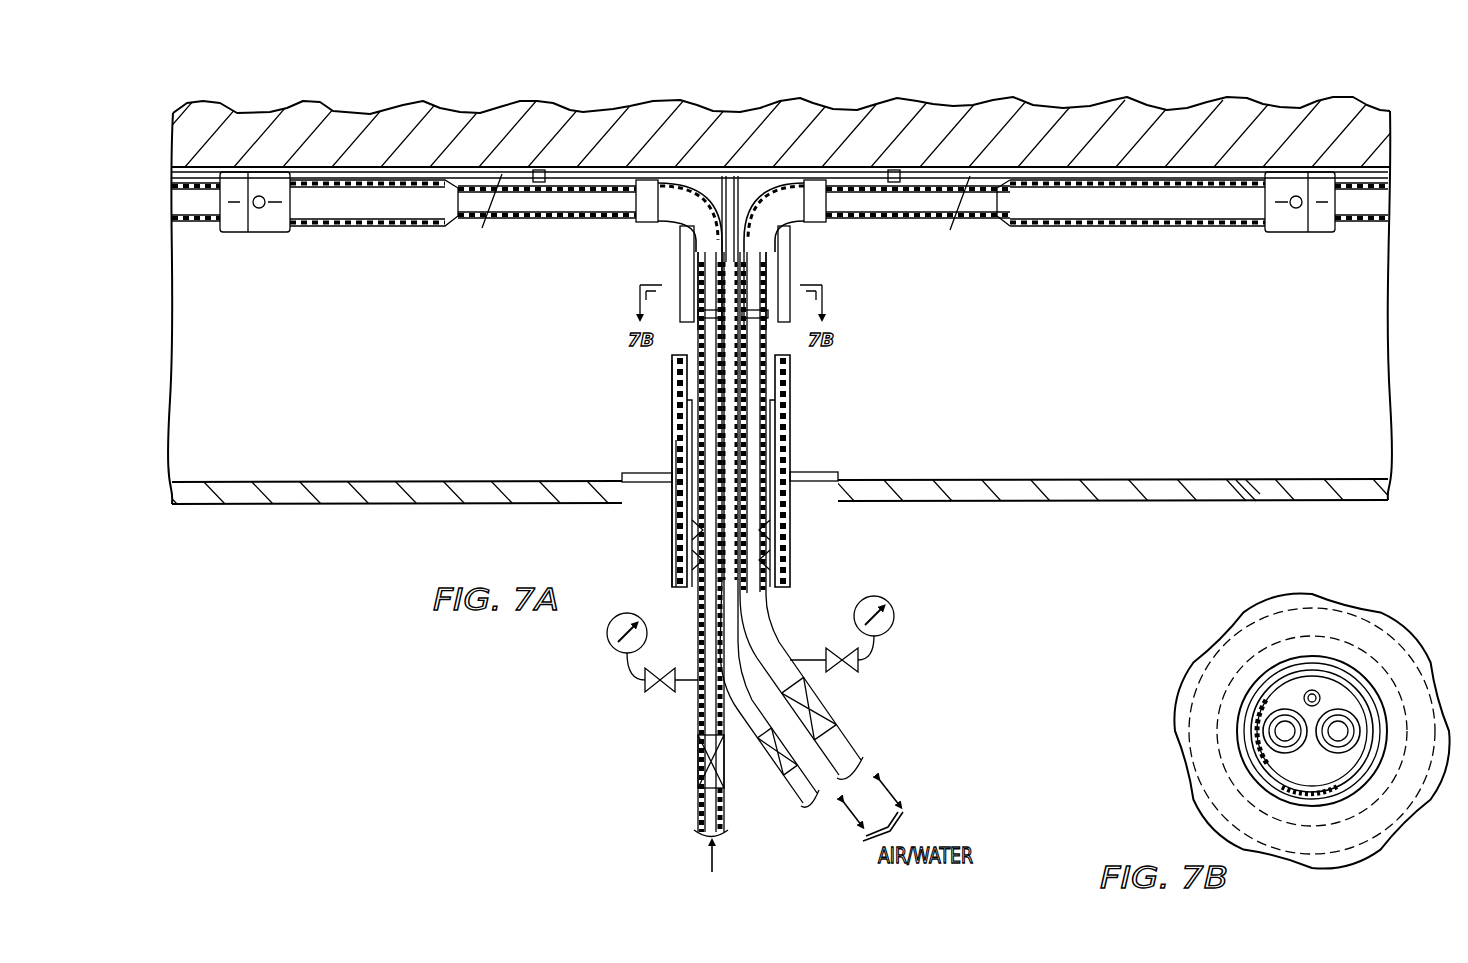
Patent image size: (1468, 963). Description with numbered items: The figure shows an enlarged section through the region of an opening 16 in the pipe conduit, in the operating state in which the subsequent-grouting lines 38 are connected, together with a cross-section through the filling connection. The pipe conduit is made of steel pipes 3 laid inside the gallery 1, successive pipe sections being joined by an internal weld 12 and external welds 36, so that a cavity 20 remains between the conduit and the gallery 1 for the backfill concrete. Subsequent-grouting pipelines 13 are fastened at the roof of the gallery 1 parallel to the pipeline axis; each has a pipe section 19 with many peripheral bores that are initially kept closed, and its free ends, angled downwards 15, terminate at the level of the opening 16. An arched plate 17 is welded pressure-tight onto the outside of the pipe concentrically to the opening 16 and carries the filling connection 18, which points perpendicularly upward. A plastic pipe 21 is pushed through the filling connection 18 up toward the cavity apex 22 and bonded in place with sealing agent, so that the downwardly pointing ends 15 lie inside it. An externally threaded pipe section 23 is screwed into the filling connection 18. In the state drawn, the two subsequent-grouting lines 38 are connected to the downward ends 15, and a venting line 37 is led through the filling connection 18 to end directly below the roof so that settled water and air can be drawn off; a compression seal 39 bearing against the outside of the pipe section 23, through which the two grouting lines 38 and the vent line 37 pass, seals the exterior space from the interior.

In FIG. 7A, the gallery 1 is at (739, 116).
In FIG. 7A, the steel pipe 3 is at (1029, 502).
In FIG. 7A, the internal weld 12 is at (463, 482).
In FIG. 7A, the subsequent-grouting pipeline 13 is at (360, 227).
In FIG. 7A, the free ends, angled downwards 15 is at (699, 282).
In FIG. 7B, the opening 16 is at (1393, 630).
In FIG. 7B, the arched plate 17 is at (1193, 690).
In FIG. 7A, the filling connection 18 is at (791, 416).
In FIG. 7B, the filling connection 18 is at (1380, 792).
In FIG. 7A, the pipe section 19 is at (223, 228).
In FIG. 7A, the cavity 20 is at (1043, 362).
In FIG. 7A, the plastic pipe 21 is at (786, 258).
In FIG. 7B, the plastic pipe 21 is at (1256, 734).
In FIG. 7A, the cavity apex 22 is at (514, 177).
In FIG. 7A, the pipe section 23 is at (674, 531).
In FIG. 7A, the external weld 36 is at (1250, 482).
In FIG. 7A, the venting line 37 is at (814, 791).
In FIG. 7B, the venting line 37 is at (1313, 690).
In FIG. 7A, the subsequent grouting line 38 is at (698, 611).
In FIG. 7B, the subsequent grouting line 38 is at (1285, 712).
In FIG. 7A, the compression seal 39 is at (776, 538).
In FIG. 7B, the compression seal 39 is at (1278, 697).